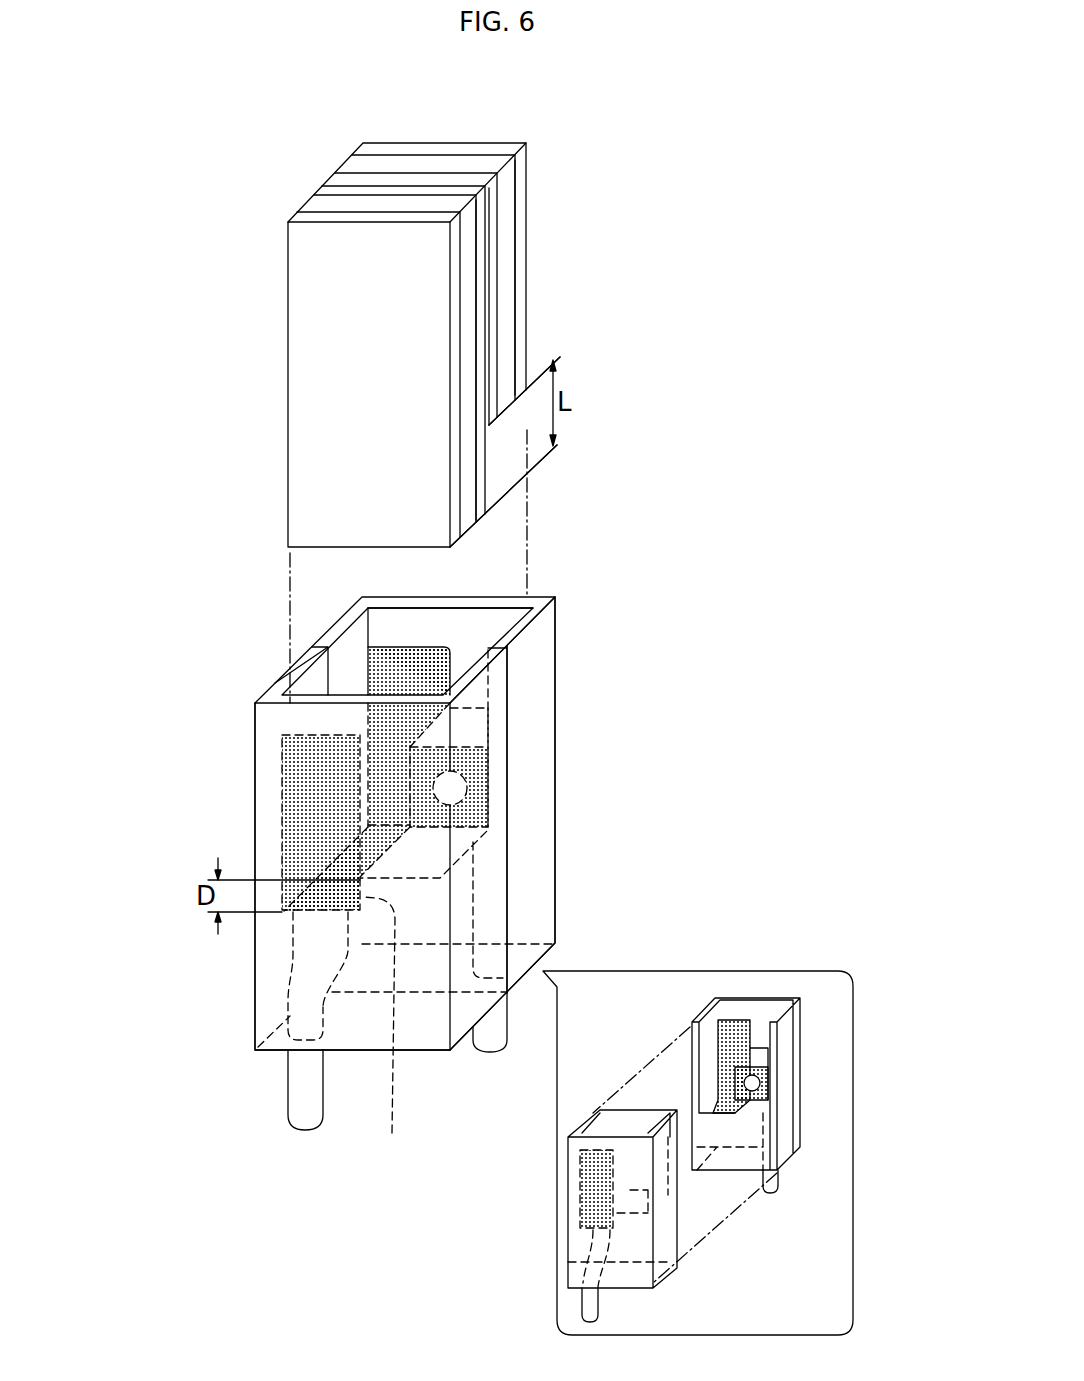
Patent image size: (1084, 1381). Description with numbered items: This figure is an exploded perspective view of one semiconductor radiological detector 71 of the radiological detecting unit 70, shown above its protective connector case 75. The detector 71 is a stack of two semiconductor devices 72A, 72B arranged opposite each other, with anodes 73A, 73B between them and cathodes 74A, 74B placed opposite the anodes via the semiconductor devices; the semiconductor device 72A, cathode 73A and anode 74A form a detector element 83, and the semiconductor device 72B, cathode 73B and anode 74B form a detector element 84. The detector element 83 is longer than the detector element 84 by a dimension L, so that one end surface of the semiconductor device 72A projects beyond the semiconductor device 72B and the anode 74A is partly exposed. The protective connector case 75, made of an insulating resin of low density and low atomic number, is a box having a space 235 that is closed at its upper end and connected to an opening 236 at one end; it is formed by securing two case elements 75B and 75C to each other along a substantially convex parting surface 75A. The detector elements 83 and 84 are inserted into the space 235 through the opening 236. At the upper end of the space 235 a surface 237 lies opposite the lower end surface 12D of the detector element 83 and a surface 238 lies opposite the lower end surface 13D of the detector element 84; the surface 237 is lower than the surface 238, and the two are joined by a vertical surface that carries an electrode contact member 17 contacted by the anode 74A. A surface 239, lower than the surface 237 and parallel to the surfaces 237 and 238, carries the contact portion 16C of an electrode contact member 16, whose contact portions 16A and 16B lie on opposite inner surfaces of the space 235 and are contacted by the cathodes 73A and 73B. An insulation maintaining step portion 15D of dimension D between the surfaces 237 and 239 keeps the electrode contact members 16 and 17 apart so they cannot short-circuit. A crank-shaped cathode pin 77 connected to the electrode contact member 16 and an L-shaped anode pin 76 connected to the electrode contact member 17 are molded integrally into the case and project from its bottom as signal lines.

The radiological detecting unit 70 is at (550, 548).
The semiconductor radiological detector 71 is at (272, 391).
The semiconductor device 72A is at (317, 203).
The semiconductor device 72B is at (367, 165).
The cathode 73A is at (322, 184).
The cathode 73B is at (347, 178).
The anode 74A is at (307, 214).
The anode 74B is at (385, 148).
The detector element 83 is at (478, 317).
The detector element 84 is at (514, 222).
The lower end surface 12D is at (472, 528).
The lower end surface 13D is at (508, 405).
The insulation maintaining step portion 15D is at (395, 1033).
The electrode contact member 16 is at (295, 803).
The contact portion 16A is at (284, 757).
The contact portion 16B is at (382, 672).
The contact portion 16C is at (488, 827).
The electrode contact member 17 is at (490, 781).
The protective connector case 75 is at (556, 666).
The parting surface 75A is at (508, 887).
The case element 75B is at (270, 980).
The case element 75C is at (537, 927).
The anode pin 76 is at (498, 1024).
The cathode pin 77 is at (300, 1100).
The space 235 is at (418, 622).
The opening 236 is at (352, 645).
The surface 237 is at (475, 833).
The surface 238 is at (473, 729).
The surface 239 is at (293, 928).